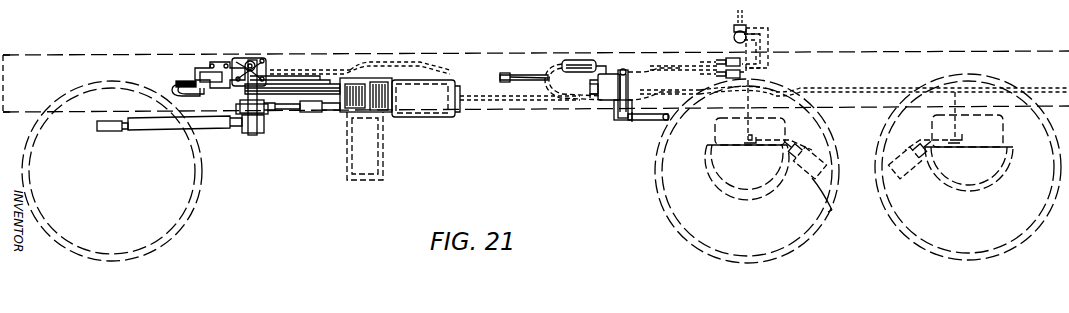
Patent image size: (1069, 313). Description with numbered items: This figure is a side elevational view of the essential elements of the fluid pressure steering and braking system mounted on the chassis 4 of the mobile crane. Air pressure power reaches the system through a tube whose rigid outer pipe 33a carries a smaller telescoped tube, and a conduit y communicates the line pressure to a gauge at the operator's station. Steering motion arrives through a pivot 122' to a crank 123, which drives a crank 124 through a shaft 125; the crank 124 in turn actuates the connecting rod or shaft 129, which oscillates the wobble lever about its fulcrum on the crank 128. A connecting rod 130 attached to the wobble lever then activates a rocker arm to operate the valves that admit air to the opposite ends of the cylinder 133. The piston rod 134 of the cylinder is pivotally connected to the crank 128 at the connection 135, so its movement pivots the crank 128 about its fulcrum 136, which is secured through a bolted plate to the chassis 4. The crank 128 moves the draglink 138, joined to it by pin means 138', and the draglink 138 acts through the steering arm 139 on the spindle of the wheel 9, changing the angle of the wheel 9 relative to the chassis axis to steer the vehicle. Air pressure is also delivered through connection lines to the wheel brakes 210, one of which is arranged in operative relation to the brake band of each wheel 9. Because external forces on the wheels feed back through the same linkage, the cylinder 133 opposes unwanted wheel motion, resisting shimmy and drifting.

The chassis 4 is at (134, 60).
The wheel 9 is at (170, 246).
The connecting rod 130 is at (220, 62).
The fulcrum 136 is at (258, 60).
The crank 128 is at (268, 90).
The pivotal connection 135 is at (262, 113).
The piston rod 134 is at (308, 112).
The cylinder 133 is at (428, 115).
The draglink 138 is at (185, 131).
The pin means 138' is at (253, 112).
The steering arm 139 is at (110, 132).
The connecting rod or shaft 129 is at (530, 74).
The crank 124 is at (600, 104).
The shaft 125 is at (614, 118).
The crank 123 is at (645, 121).
The pivot 122' is at (752, 146).
The rigid outer pipe 33a is at (740, 10).
The conduit y is at (770, 44).
The wheel brake 210 is at (898, 185).